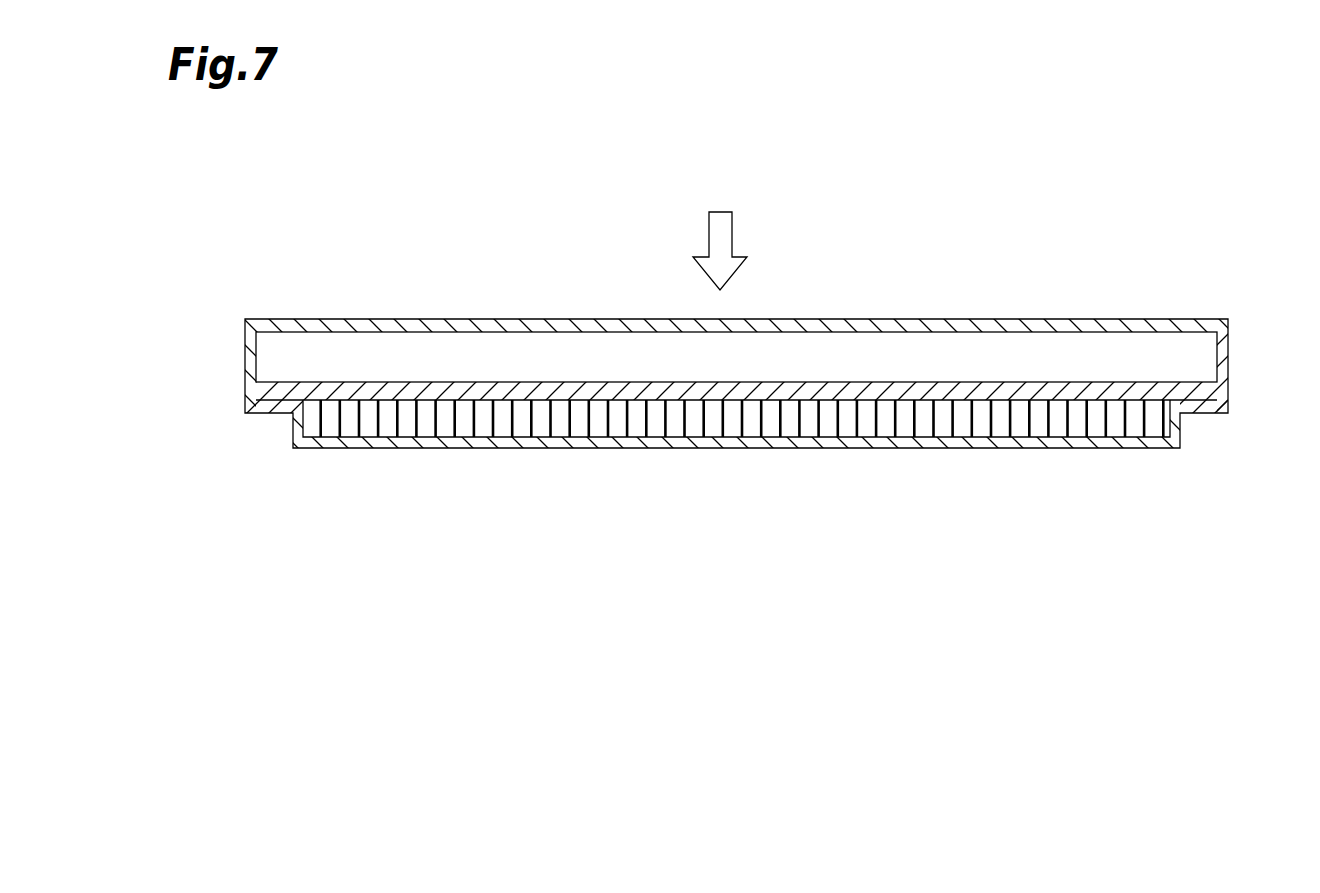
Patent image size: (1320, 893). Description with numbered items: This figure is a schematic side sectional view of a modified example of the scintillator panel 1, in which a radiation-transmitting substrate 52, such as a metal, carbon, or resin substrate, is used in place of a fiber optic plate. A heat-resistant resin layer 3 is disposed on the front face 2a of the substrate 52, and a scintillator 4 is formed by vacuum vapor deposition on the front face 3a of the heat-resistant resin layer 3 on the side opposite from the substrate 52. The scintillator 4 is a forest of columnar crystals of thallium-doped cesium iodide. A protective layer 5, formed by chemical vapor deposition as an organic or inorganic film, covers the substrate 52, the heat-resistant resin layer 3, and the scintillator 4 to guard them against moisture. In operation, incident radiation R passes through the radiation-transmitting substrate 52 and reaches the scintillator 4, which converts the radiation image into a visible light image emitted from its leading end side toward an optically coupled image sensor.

The scintillator panel 1 is at (1188, 254).
The front face of the substrate 2a is at (1155, 382).
The heat-resistant resin layer 3 is at (858, 390).
The front face of the heat-resistant resin layer 3a is at (1065, 410).
The scintillator 4 is at (567, 416).
The protective layer 5 is at (420, 445).
The radiation-transmitting substrate 52 is at (960, 337).
The radiation R is at (722, 228).